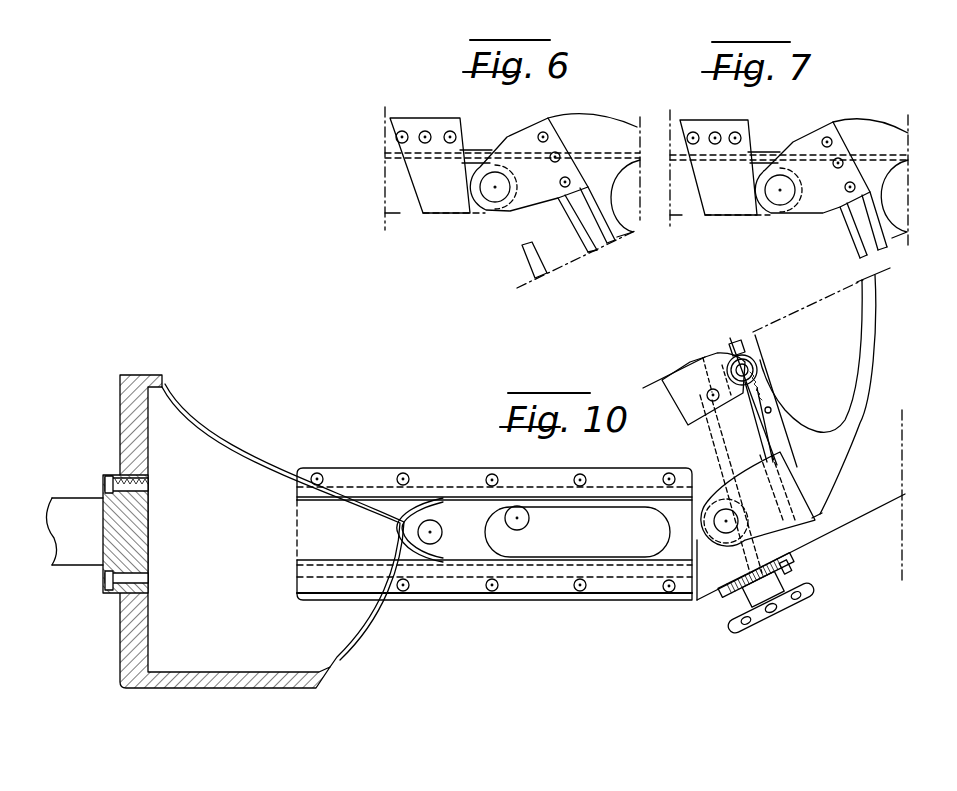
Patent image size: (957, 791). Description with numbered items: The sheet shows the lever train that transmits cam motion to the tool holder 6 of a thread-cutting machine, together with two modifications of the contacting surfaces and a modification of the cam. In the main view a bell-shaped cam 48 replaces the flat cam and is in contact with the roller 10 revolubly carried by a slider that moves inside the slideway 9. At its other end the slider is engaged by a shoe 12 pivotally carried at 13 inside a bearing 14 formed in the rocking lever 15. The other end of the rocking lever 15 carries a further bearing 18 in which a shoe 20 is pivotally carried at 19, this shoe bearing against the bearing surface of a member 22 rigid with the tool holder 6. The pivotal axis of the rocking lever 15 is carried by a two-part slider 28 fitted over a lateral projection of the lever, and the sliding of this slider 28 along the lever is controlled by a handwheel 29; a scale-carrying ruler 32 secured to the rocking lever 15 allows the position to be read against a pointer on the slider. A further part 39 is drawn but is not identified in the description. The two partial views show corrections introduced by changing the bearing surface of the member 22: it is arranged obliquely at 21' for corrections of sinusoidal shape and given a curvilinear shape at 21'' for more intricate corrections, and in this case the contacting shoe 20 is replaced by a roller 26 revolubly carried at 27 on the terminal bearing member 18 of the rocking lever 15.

In FIG. 6, the tool holder 6 is at (400, 205).
In FIG. 7, the tool holder 6 is at (688, 203).
In FIG. 10, the slideway 9 is at (355, 478).
In FIG. 10, the roller 10 is at (420, 498).
In FIG. 10, the shoe 12 is at (703, 548).
In FIG. 10, the pivot of the shoe 13 is at (724, 528).
In FIG. 10, the bearing 14 is at (800, 502).
In FIG. 6, the rocking lever 15 is at (583, 130).
In FIG. 7, the rocking lever 15 is at (867, 137).
In FIG. 10, the rocking lever 15 is at (863, 420).
In FIG. 6, the bearing 18 is at (522, 140).
In FIG. 7, the bearing 18 is at (800, 140).
In FIG. 6, the pivot of the shoe 19 is at (496, 196).
In FIG. 6, the shoe 20 is at (478, 211).
In FIG. 6, the oblique bearing surface 21' is at (481, 129).
In FIG. 7, the curvilinear bearing surface 21'' is at (777, 131).
In FIG. 6, the member rigid with the tool holder 22 is at (448, 202).
In FIG. 7, the member rigid with the tool holder 22 is at (707, 127).
In FIG. 7, the roller 26 is at (777, 196).
In FIG. 7, the pivot of the roller 27 is at (780, 200).
In FIG. 10, the slider 28 is at (690, 378).
In FIG. 10, the handwheel 29 is at (789, 606).
In FIG. 10, the scale-carrying ruler 32 is at (737, 343).
In FIG. 10, the clamp 39 is at (783, 572).
In FIG. 10, the bell-shaped cam 48 is at (213, 468).